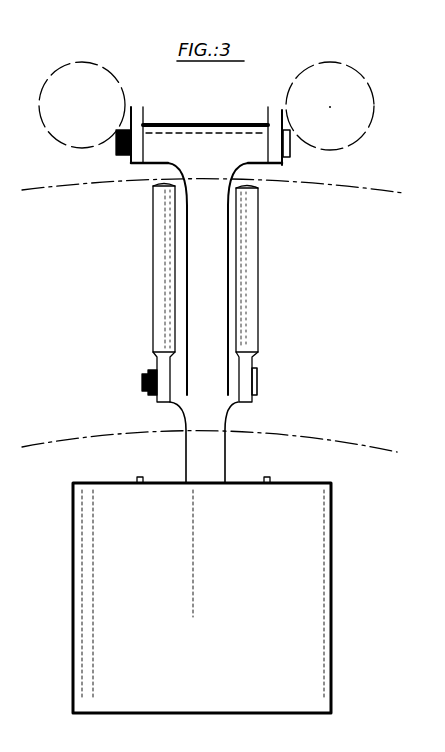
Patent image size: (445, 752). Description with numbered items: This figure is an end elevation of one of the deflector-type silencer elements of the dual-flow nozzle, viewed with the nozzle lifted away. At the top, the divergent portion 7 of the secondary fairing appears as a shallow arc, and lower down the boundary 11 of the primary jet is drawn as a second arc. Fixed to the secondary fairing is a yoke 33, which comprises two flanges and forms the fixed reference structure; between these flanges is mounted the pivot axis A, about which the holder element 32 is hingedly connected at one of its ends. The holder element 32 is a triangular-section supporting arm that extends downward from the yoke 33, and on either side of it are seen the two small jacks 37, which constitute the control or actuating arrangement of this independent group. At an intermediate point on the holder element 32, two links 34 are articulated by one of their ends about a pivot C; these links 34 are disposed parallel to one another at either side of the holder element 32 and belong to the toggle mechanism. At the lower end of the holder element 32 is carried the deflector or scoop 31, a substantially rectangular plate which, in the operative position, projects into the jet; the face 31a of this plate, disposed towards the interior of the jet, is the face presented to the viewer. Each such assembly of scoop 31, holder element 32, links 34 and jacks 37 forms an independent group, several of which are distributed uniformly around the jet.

The divergent portion 7 is at (43, 183).
The boundary of the primary jet 11 is at (62, 436).
The deflector or scoop 31 is at (296, 510).
The face disposed towards the interior of the jet 31a is at (210, 671).
The holder element 32 is at (213, 255).
The yoke 33 is at (146, 115).
The link 34 is at (164, 300).
The jack 37 is at (109, 70).
The pivot axis A is at (290, 152).
The pivot C is at (257, 385).